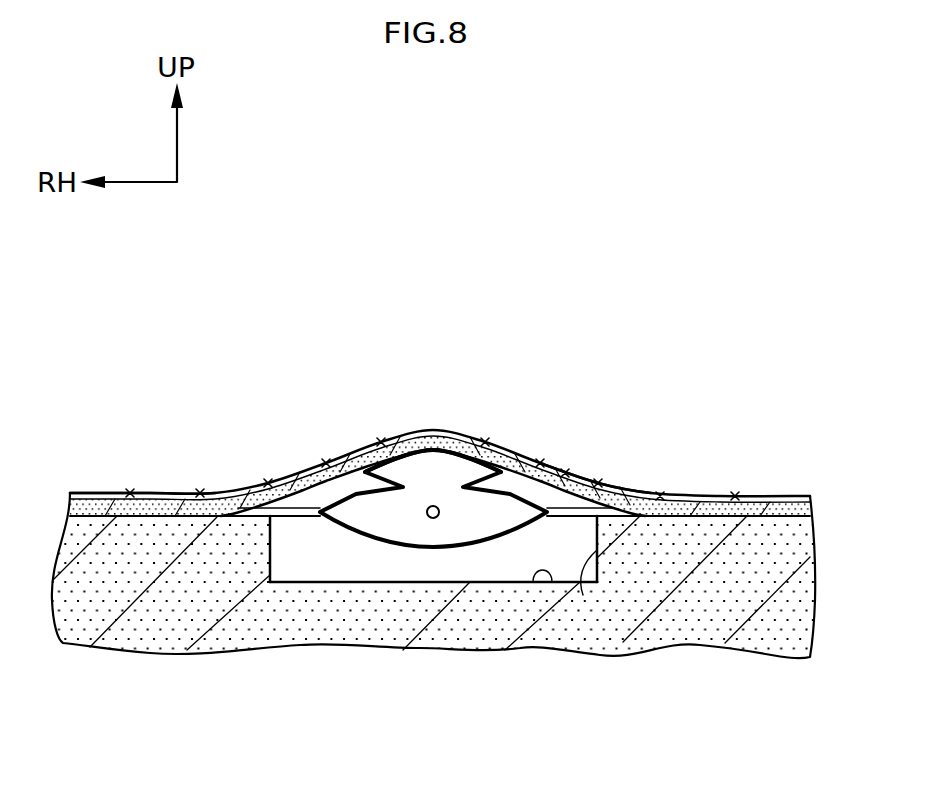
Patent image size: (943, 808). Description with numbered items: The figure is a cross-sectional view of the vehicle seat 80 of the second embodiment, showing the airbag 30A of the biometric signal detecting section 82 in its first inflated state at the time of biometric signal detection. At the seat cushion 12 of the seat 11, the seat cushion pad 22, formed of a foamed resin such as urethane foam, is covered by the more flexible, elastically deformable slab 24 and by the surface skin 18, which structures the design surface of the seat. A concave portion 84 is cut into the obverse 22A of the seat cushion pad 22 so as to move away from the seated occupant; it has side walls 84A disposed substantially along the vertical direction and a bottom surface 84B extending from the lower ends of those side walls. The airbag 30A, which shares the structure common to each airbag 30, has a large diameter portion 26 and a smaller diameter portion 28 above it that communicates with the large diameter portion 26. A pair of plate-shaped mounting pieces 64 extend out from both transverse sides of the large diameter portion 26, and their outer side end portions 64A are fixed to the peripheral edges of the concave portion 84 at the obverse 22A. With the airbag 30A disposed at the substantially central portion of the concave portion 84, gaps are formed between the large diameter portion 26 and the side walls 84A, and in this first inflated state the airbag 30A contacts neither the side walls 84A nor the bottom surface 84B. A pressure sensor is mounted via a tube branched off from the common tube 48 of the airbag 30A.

The vehicle seat 80 is at (142, 368).
The biometric signal detecting section 82 is at (637, 433).
The seat cushion 12 is at (440, 432).
The vehicle interior member 11 is at (440, 432).
The surface skin 18 is at (122, 497).
The slab 24 is at (147, 508).
The seat cushion pad 22 is at (213, 596).
The obverse 22A is at (222, 510).
The mounting pieces 64 is at (432, 443).
The outer side end portions 64A is at (262, 485).
The small diameter portion 28 is at (438, 466).
The large diameter portion 26 is at (403, 542).
The common tube 48 is at (427, 515).
The airbag 30A is at (473, 621).
The airbag 30 is at (473, 633).
The concave portion 84 is at (439, 639).
The side walls 84A is at (583, 595).
The bottom surface 84B is at (552, 582).